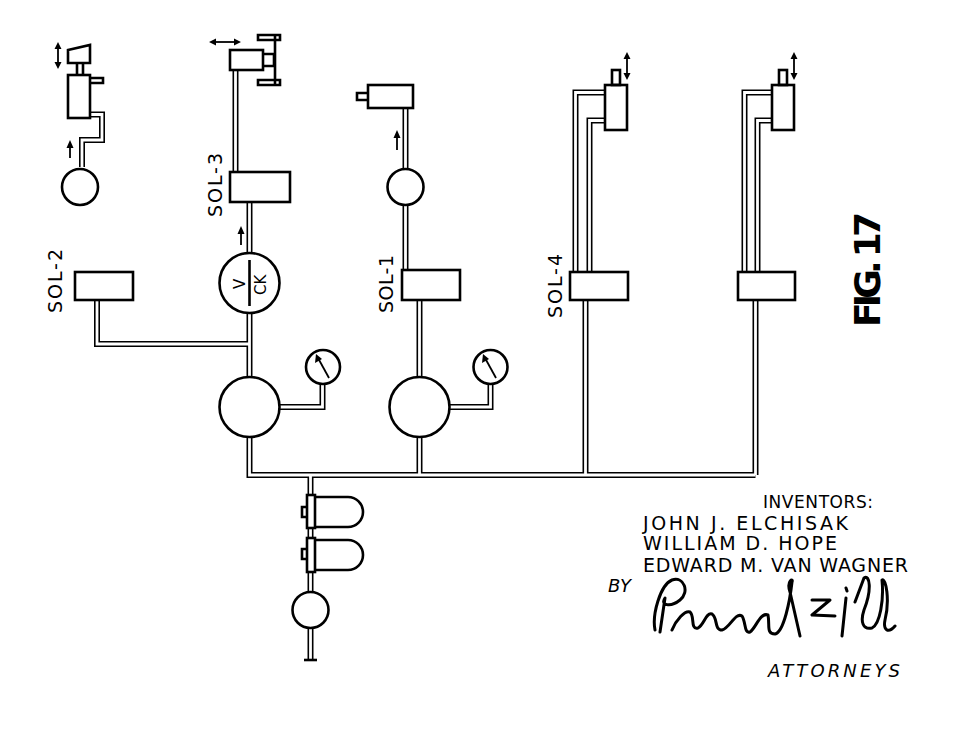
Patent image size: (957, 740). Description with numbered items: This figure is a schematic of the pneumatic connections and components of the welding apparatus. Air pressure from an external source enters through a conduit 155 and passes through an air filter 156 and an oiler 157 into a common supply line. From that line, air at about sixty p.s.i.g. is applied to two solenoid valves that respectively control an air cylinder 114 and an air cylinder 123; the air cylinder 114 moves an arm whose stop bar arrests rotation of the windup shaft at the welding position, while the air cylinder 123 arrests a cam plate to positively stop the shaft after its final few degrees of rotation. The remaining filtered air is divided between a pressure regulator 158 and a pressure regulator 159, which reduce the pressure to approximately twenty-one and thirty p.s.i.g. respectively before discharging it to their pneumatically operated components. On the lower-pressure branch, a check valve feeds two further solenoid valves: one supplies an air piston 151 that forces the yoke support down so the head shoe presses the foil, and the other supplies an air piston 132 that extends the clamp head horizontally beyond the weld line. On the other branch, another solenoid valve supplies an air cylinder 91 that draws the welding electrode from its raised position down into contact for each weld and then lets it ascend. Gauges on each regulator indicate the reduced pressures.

The air cylinder 91 is at (386, 92).
The air cylinder 114 is at (617, 102).
The air cylinder 123 is at (785, 100).
The air piston 132 is at (68, 95).
The air piston 151 is at (230, 57).
The conduit 155 is at (306, 640).
The air filter 156 is at (360, 556).
The oiler 157 is at (360, 510).
The pressure regulator 158 is at (222, 422).
The pressure regulator 159 is at (387, 412).